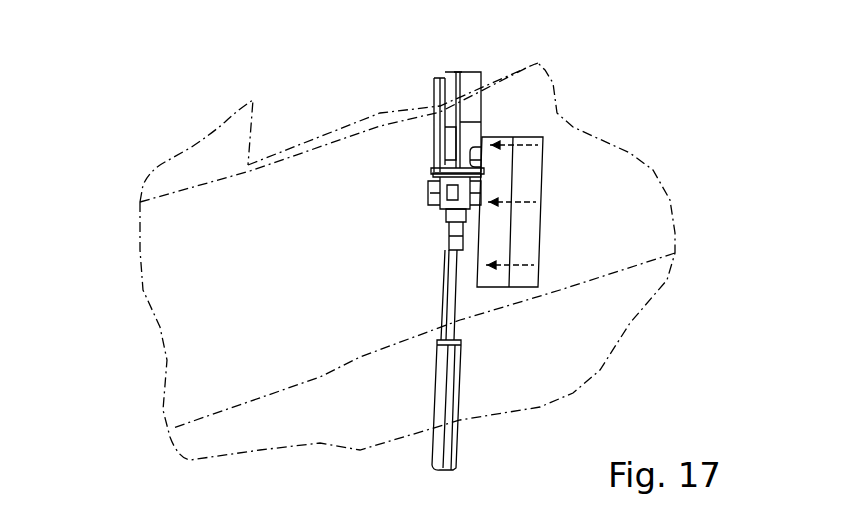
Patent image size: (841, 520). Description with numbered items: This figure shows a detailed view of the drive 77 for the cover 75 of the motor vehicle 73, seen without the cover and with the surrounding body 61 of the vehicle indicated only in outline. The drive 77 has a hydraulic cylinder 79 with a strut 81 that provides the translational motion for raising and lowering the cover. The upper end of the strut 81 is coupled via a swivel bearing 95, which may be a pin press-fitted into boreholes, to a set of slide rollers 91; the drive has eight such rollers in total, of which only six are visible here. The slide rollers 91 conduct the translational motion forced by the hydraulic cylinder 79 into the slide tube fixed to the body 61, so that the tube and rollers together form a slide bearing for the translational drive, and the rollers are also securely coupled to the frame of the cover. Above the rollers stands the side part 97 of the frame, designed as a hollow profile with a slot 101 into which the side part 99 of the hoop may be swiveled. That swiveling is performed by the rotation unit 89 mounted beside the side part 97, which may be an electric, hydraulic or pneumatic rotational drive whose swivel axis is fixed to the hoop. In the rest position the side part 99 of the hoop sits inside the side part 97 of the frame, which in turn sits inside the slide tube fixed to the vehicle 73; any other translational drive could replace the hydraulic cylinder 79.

The body 61 is at (630, 338).
The motor vehicle 73 is at (213, 302).
The cover 75 is at (457, 66).
The drive 77 is at (432, 230).
The hydraulic cylinder 79 is at (448, 385).
The strut 81 is at (445, 303).
The rotation unit 89 is at (533, 175).
The slide rollers 91 is at (430, 183).
The swivel bearing 95 is at (446, 221).
The side part of frame 97 is at (473, 117).
The side part of hoop 99 is at (441, 126).
The slot 101 is at (452, 88).